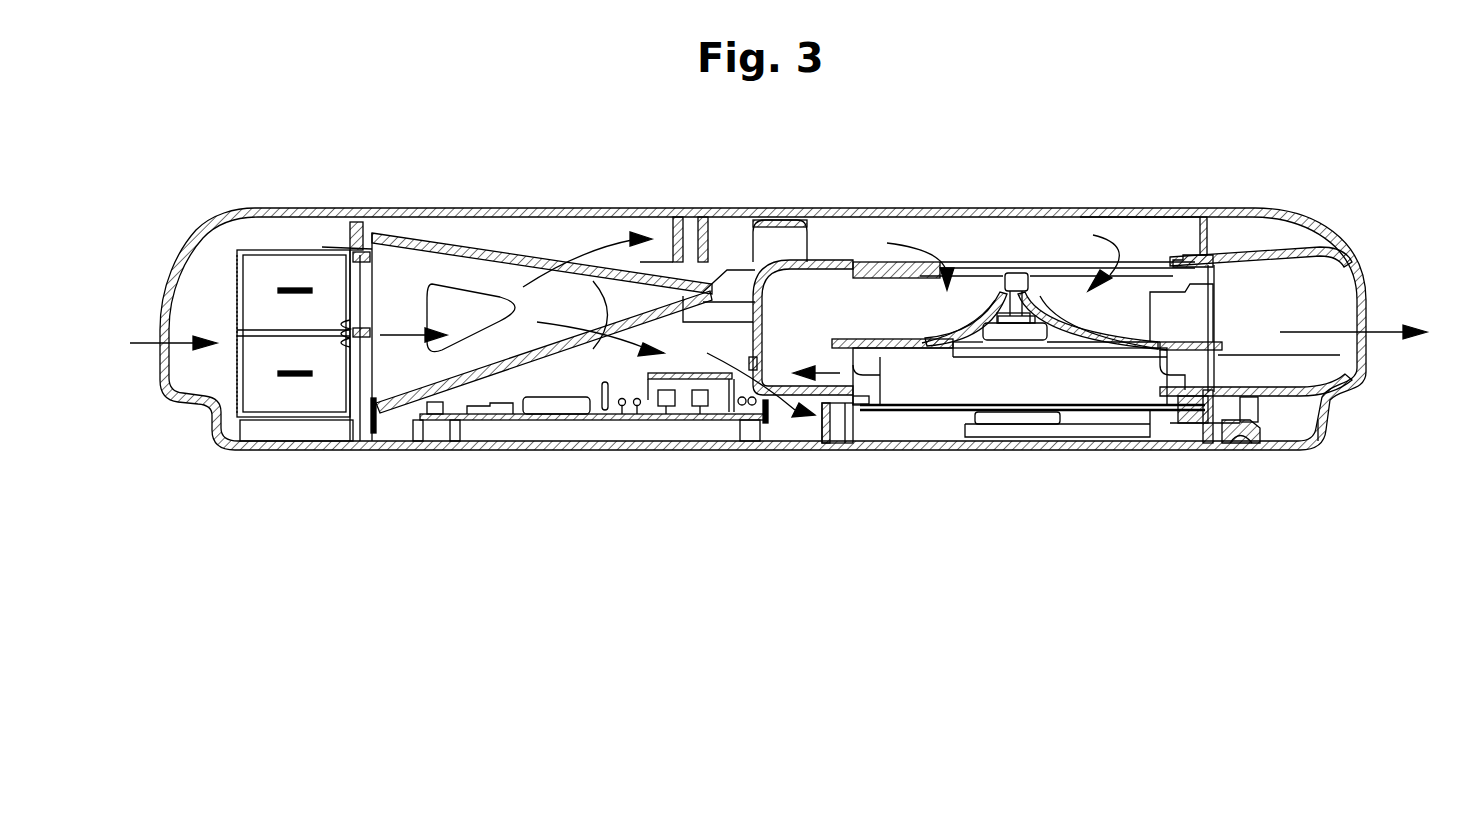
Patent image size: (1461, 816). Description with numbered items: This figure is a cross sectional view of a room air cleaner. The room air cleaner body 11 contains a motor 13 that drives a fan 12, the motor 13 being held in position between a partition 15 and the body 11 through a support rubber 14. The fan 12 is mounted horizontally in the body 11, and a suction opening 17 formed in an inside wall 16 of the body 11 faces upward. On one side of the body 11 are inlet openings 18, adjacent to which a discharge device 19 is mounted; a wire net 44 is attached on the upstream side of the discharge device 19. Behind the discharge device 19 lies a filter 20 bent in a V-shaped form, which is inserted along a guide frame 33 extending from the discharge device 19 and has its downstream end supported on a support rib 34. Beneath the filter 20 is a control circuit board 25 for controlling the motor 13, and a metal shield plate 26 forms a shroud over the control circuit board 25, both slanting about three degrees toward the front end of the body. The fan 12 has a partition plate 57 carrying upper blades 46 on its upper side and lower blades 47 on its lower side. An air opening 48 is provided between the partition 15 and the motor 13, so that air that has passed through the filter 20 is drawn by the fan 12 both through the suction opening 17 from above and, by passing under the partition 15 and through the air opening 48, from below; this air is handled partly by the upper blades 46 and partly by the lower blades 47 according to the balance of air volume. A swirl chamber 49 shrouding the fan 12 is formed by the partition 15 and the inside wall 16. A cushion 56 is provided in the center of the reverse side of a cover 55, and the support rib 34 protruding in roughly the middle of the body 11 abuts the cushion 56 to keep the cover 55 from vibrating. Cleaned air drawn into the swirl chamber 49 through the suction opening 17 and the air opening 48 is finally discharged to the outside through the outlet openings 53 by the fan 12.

The room air cleaner body 11 is at (1370, 378).
The fan 12 is at (1213, 302).
The motor 13 is at (1120, 383).
The support rubber 14 is at (1205, 375).
The partition 15 is at (795, 388).
The inside wall 16 is at (847, 275).
The suction opening 17 is at (980, 252).
The inlet openings 18 is at (175, 279).
The discharge device 19 is at (286, 250).
The filter 20 is at (466, 245).
The control circuit board 25 is at (553, 421).
The metal shield plate 26 is at (655, 380).
The guide frame 33 is at (407, 277).
The support rib 34 is at (737, 250).
The wire net 44 is at (237, 282).
The upper blades 46 is at (1167, 290).
The lower blades 47 is at (1247, 440).
The air opening 48 is at (869, 402).
The swirl chamber 49 is at (788, 330).
The outlet openings 53 is at (1362, 270).
The cover 55 is at (1138, 210).
The cushion 56 is at (779, 220).
The partition plate 57 is at (1065, 325).